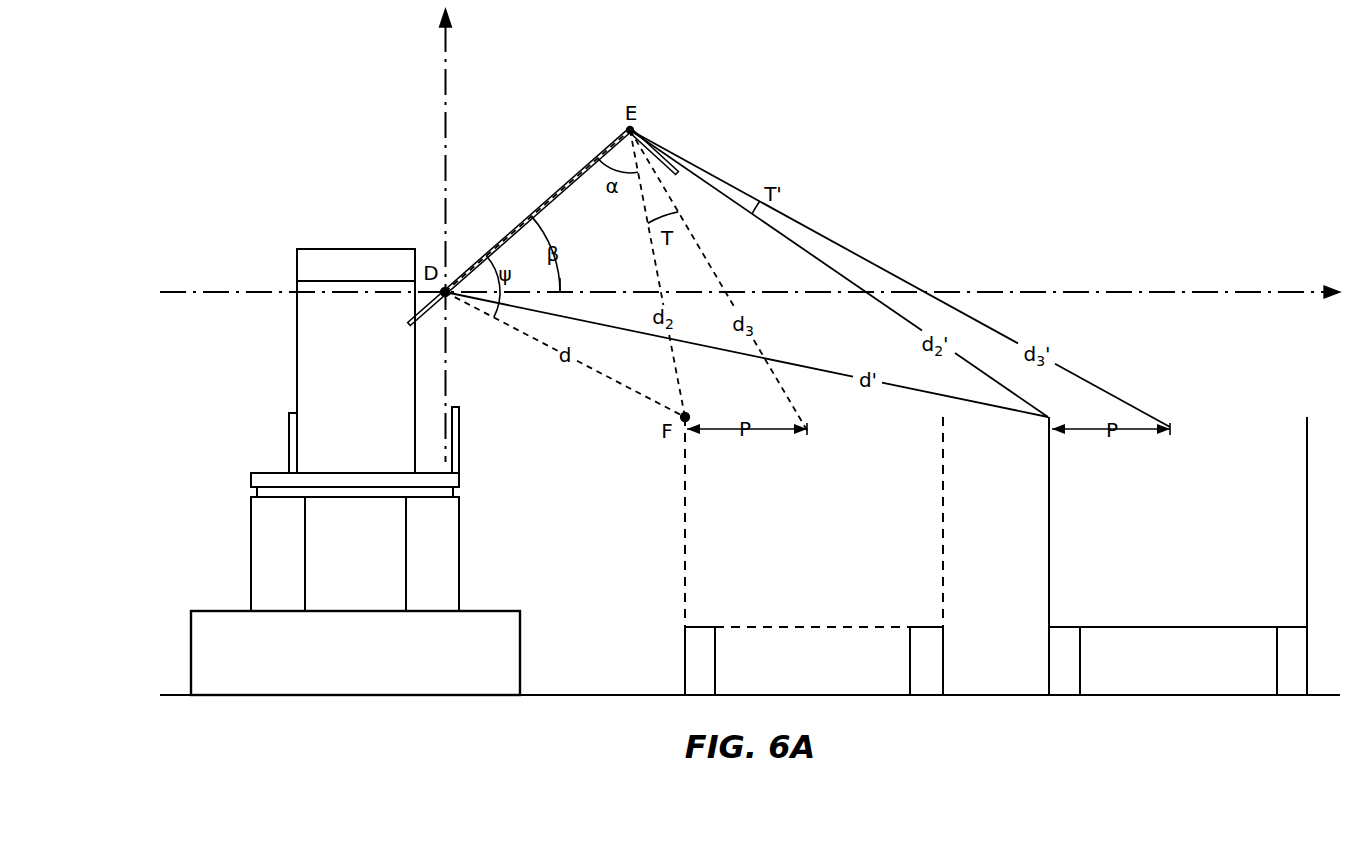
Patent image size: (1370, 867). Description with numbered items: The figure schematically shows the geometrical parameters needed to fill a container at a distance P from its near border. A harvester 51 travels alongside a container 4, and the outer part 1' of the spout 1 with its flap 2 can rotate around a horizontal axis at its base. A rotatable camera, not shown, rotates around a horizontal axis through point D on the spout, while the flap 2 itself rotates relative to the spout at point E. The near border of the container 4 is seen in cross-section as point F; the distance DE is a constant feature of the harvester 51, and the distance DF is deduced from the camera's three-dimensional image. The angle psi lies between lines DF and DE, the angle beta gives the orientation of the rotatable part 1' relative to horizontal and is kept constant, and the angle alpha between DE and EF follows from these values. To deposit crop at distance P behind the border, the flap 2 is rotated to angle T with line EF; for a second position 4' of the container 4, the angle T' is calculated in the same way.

The spout 1 is at (452, 235).
The outer part of the spout 1' is at (521, 226).
The flap 2 is at (661, 155).
The container 4 is at (788, 556).
The second position of the container 4' is at (1150, 556).
The harvester 51 is at (297, 358).